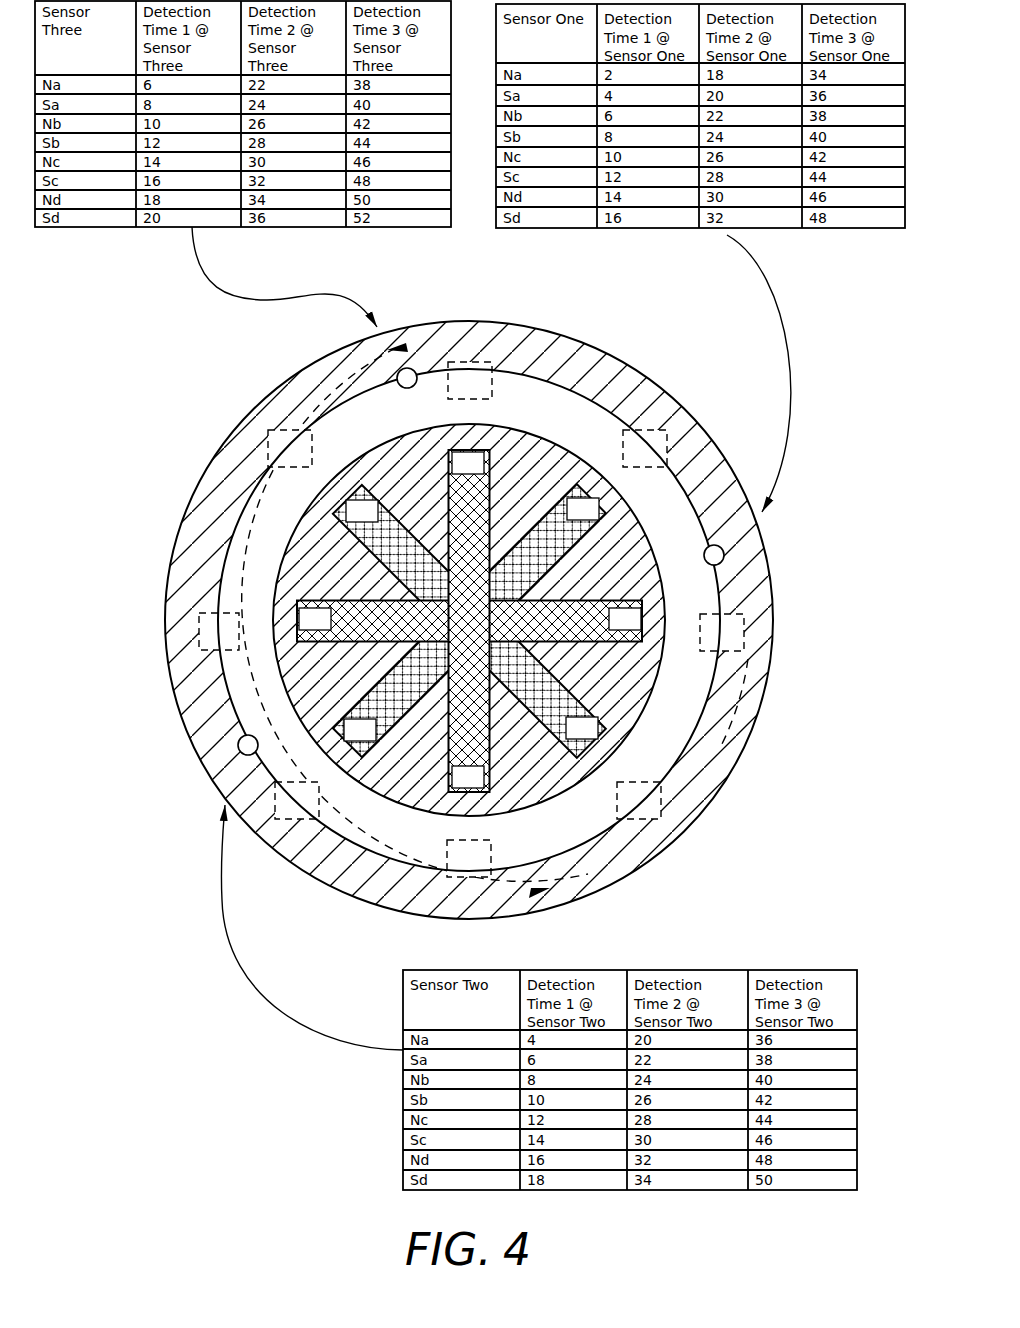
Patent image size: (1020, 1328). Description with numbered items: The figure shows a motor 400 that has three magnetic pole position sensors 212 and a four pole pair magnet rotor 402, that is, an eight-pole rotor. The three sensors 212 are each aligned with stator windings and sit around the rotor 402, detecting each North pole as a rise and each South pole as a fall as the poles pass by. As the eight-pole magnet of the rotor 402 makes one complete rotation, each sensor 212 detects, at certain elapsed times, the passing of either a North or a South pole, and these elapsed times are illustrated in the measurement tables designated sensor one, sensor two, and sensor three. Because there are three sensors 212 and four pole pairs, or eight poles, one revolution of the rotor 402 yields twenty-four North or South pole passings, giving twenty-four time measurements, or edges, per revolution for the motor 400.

The motor 400 is at (455, 599).
The magnetic pole position sensors 212 is at (405, 377).
The rotor 402 is at (648, 583).